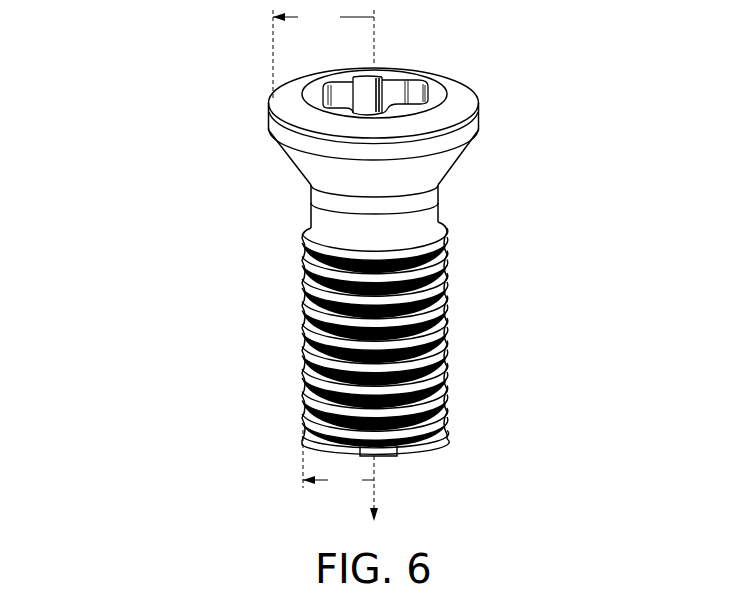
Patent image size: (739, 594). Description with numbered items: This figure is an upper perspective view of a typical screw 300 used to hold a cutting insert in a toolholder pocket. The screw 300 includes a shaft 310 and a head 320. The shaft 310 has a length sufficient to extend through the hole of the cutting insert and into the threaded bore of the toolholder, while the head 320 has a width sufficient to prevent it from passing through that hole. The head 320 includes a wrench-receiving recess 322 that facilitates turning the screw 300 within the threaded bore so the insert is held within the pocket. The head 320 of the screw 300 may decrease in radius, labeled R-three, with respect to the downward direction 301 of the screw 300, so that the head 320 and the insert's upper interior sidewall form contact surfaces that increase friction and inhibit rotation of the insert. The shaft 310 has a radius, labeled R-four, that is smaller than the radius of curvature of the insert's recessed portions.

The screw 300 is at (207, 75).
The head 320 is at (506, 120).
The wrench-receiving recess 322 is at (385, 95).
The shaft 310 is at (476, 313).
The downward direction 301 is at (378, 491).